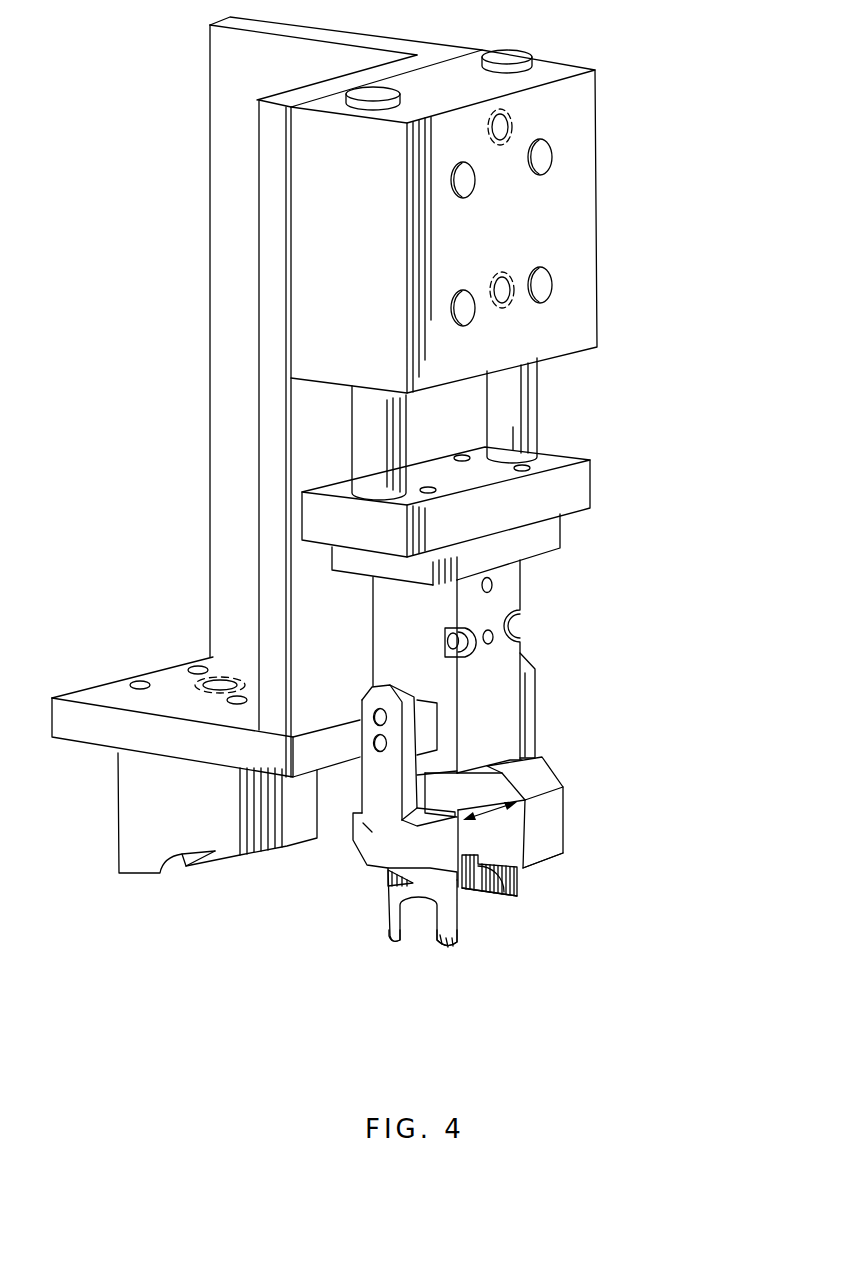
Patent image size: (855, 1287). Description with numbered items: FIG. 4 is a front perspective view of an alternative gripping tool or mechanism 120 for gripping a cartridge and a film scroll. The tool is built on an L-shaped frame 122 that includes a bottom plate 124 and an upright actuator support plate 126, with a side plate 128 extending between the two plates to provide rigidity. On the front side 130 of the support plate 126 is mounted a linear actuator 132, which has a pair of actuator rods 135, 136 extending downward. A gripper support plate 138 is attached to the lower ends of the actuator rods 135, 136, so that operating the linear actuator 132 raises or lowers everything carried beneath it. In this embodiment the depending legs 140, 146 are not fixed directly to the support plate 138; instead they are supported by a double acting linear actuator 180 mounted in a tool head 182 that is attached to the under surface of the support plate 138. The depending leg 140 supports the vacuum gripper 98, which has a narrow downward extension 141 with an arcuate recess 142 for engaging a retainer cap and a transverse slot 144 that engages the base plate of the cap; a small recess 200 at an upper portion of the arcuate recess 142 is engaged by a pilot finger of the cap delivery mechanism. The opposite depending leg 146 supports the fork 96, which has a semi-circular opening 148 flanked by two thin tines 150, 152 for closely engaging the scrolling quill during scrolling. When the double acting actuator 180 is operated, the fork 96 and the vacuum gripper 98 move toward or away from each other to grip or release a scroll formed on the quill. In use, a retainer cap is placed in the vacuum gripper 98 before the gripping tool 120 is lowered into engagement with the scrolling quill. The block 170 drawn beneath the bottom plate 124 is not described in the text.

The gripping tool or mechanism 120 is at (160, 317).
The L-shaped frame 122 is at (83, 690).
The bottom plate 124 is at (112, 731).
The actuator support plate 126 is at (273, 437).
The side plate 128 is at (220, 74).
The front side of support plate 130 is at (312, 593).
The linear actuator 132 is at (444, 221).
The actuator rod 135 is at (372, 442).
The actuator rod 136 is at (510, 408).
The gripper support plate 138 is at (573, 488).
The depending leg 140 is at (529, 729).
The downward extension 141 is at (517, 873).
The arcuate recess 142 is at (490, 838).
The transverse slot 144 is at (512, 910).
The depending leg 146 is at (372, 823).
The semi-circular opening 148 is at (393, 941).
The tine 150 is at (390, 913).
The tine 152 is at (460, 930).
The lower mounting block 170 is at (137, 837).
The double acting linear actuator 180 is at (430, 728).
The tool head 182 is at (505, 595).
The recess 200 is at (527, 810).
The fork 96 is at (403, 877).
The vacuum gripper 98 is at (547, 852).